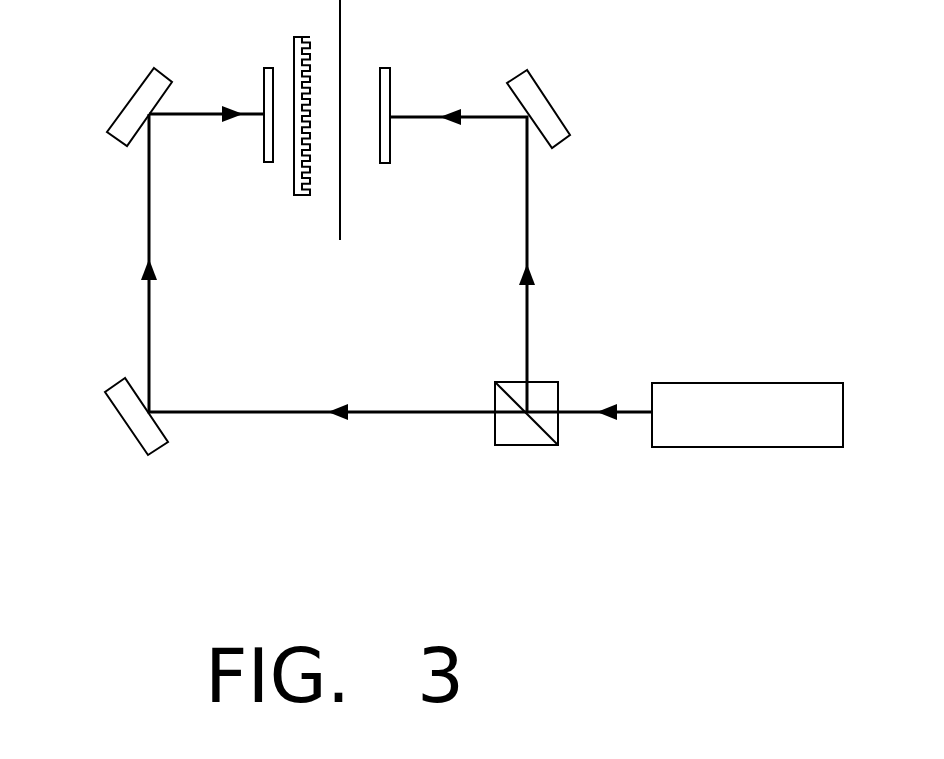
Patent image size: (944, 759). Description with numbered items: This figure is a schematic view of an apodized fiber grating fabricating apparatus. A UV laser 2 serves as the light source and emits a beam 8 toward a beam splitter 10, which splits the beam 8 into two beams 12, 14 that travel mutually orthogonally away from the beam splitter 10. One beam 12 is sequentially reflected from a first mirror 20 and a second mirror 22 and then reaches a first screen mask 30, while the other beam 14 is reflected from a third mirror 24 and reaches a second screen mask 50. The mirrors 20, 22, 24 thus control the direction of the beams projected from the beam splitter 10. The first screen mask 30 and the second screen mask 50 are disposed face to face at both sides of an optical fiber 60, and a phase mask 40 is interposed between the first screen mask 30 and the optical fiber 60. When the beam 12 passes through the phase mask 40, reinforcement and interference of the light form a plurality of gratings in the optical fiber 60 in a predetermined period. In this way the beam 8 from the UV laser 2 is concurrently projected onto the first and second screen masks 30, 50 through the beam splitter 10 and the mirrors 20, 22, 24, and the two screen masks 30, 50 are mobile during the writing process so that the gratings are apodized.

The UV laser 2 is at (745, 383).
The beam 8 is at (632, 418).
The beam splitter 10 is at (528, 447).
The beam 12 is at (273, 413).
The beam 14 is at (529, 205).
The first mirror 20 is at (132, 437).
The second mirror 22 is at (132, 102).
The third mirror 24 is at (552, 105).
The first screen mask 30 is at (265, 83).
The phase mask 40 is at (300, 198).
The second screen mask 50 is at (395, 87).
The optical fiber 60 is at (340, 225).